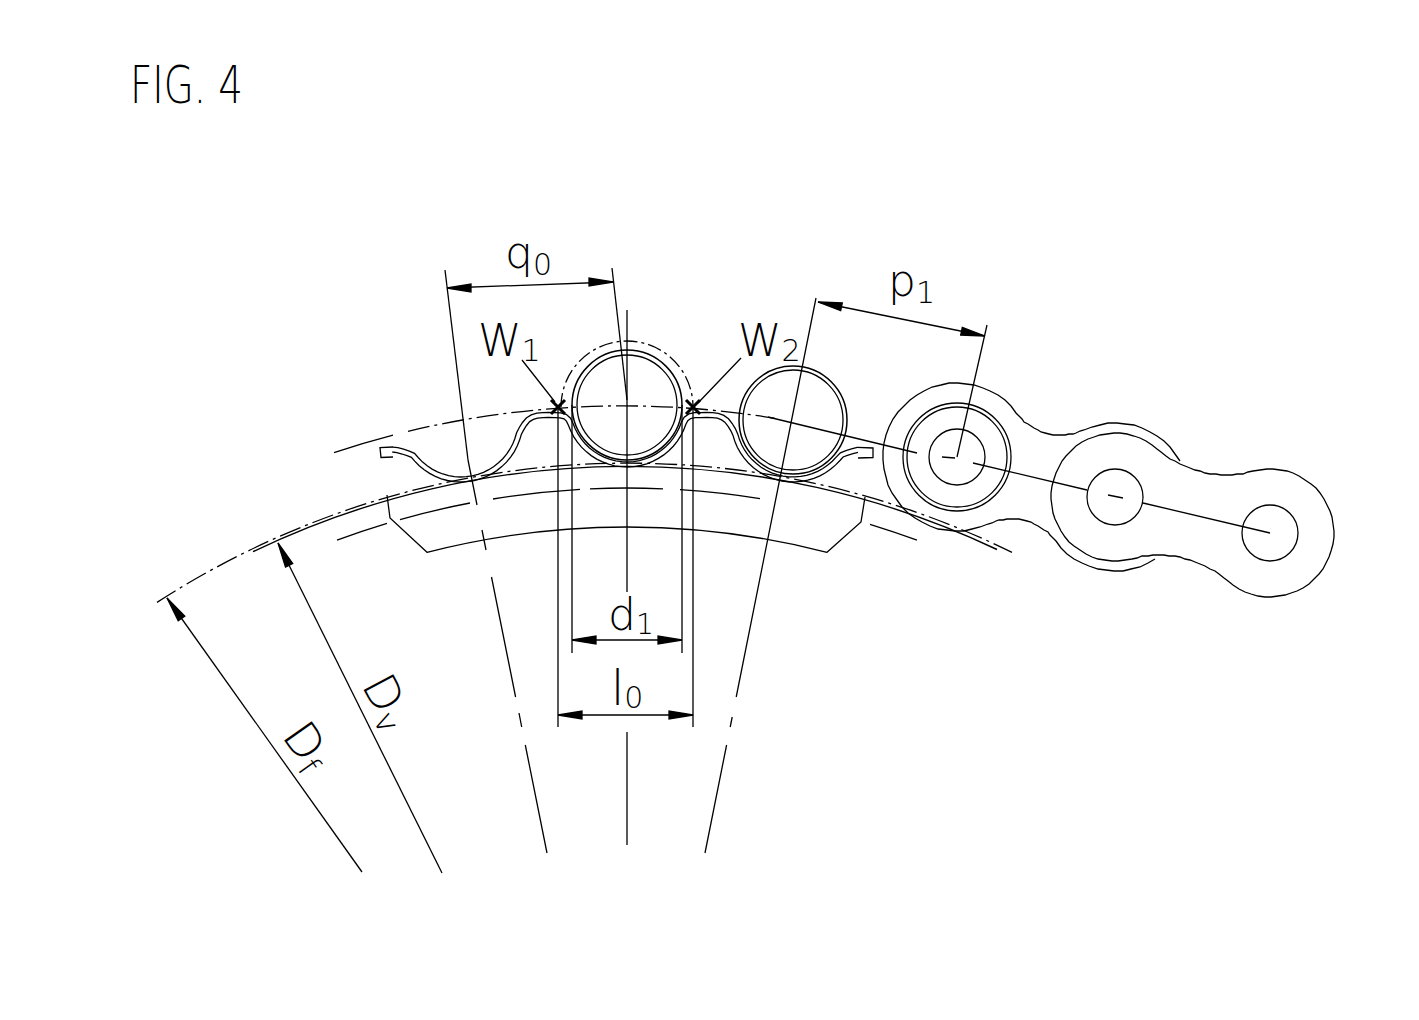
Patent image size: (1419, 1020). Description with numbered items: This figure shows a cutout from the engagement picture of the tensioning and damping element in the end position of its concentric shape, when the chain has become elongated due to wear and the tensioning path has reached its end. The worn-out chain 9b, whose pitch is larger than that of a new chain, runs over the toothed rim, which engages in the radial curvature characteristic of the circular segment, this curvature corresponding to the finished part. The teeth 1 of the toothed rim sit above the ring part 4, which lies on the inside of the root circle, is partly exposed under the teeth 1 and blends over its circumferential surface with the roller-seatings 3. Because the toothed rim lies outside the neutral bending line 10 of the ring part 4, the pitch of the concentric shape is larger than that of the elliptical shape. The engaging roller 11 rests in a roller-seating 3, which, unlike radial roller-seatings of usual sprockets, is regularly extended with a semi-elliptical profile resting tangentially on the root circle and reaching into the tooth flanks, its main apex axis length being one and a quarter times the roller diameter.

The teeth 1 is at (393, 442).
The roller-seatings 3 is at (627, 457).
The ring part 4 is at (795, 523).
The worn-out chain 9b is at (1181, 484).
The neutral bending line 10 is at (902, 542).
The engaging roller 11 is at (627, 400).